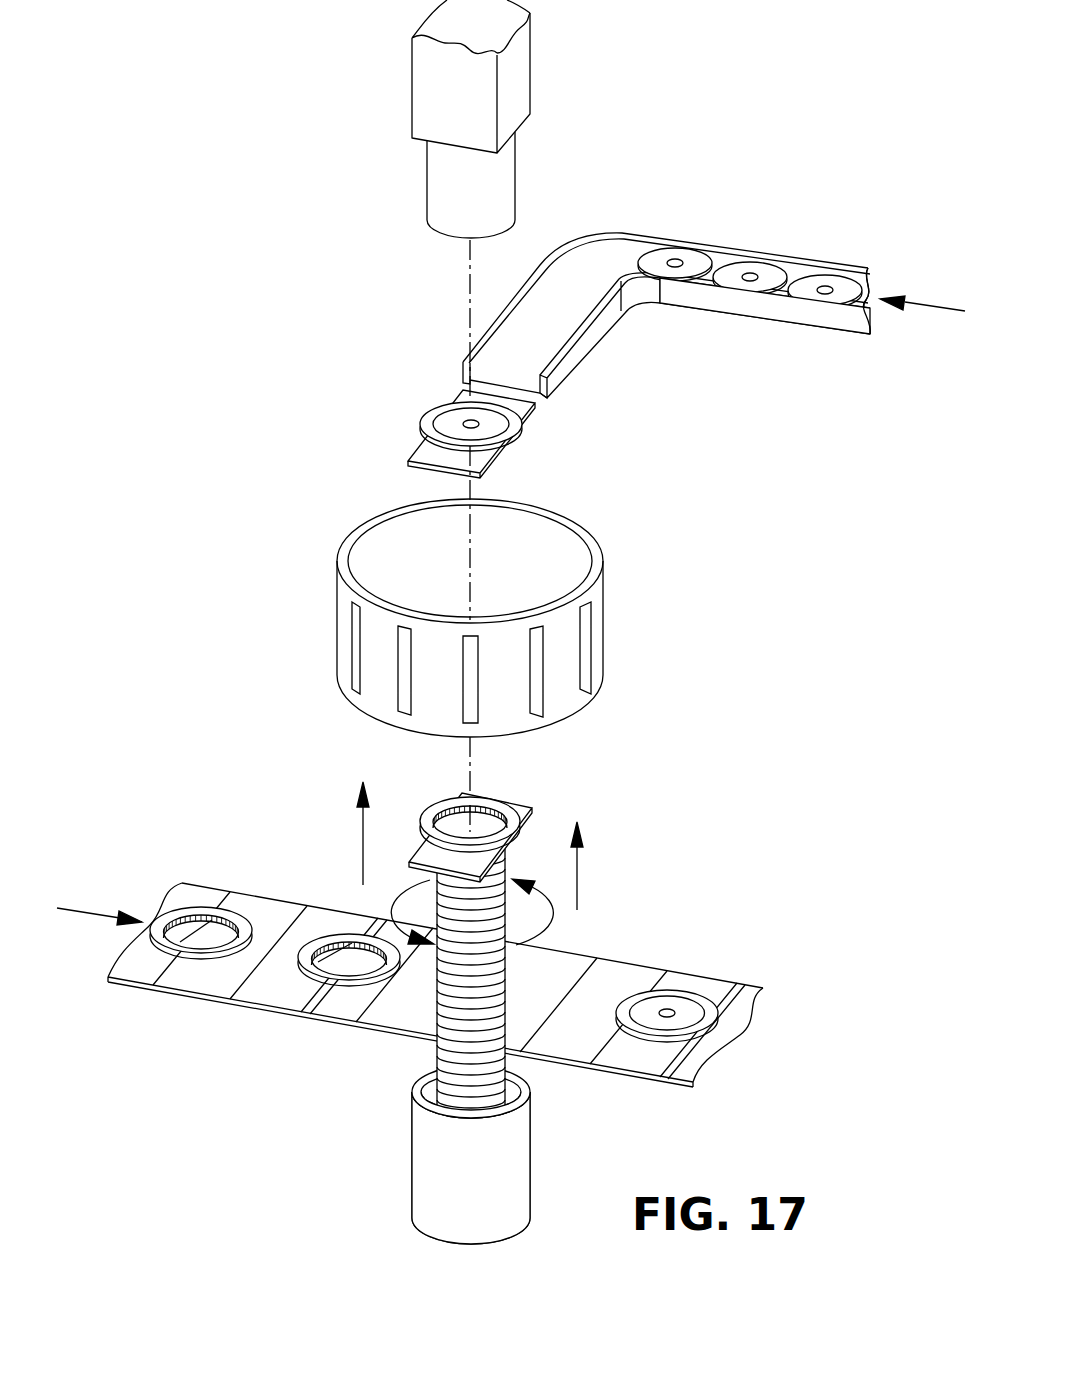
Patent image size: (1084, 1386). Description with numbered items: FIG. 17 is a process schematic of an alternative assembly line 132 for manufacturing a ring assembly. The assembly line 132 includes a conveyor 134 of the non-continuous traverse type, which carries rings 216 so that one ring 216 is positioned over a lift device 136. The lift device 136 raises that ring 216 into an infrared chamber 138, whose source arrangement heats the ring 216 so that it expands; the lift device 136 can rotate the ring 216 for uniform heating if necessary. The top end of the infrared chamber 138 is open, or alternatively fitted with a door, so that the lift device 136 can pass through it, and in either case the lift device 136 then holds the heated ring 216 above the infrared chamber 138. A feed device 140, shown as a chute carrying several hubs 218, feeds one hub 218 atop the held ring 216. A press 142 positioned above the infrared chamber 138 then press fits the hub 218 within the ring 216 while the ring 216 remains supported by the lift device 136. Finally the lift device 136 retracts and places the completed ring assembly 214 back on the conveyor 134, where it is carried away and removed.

The assembly line 132 is at (240, 757).
The conveyor 134 is at (258, 1005).
The lift device 136 is at (417, 1175).
The infrared chamber 138 is at (605, 606).
The feed device 140 is at (752, 303).
The press 142 is at (438, 186).
The ring assembly 214 is at (430, 423).
The ring 216 is at (178, 913).
The hub 218 is at (772, 268).